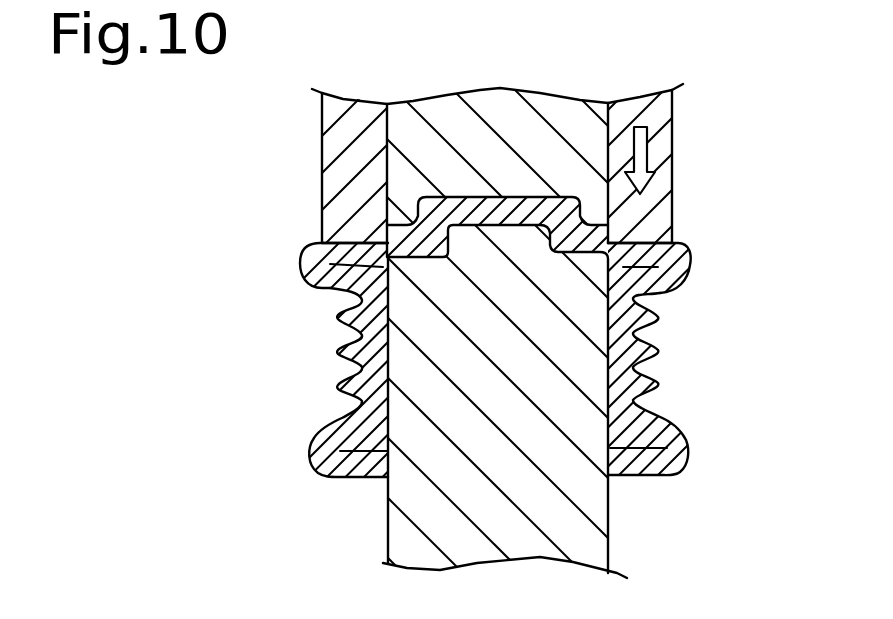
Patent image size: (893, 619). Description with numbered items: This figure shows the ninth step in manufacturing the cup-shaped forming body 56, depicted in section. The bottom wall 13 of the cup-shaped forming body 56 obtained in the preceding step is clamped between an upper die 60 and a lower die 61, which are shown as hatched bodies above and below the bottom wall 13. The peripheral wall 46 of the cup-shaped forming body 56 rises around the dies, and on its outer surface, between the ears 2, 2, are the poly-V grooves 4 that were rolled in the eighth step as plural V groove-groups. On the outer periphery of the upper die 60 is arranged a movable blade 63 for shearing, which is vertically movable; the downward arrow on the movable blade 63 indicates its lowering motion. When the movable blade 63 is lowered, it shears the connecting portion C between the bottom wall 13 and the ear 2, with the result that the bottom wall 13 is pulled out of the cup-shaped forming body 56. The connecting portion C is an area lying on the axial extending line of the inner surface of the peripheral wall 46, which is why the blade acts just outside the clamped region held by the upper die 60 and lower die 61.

The bottom wall 13 is at (453, 207).
The upper die 60 is at (538, 103).
The movable blade 63 is at (673, 145).
The connecting portion C is at (612, 243).
The ear 2 is at (693, 263).
The poly-V grooves 4 is at (355, 335).
The peripheral wall 46 is at (650, 368).
The cup-shaped forming body 56 is at (330, 493).
The lower die 61 is at (407, 537).